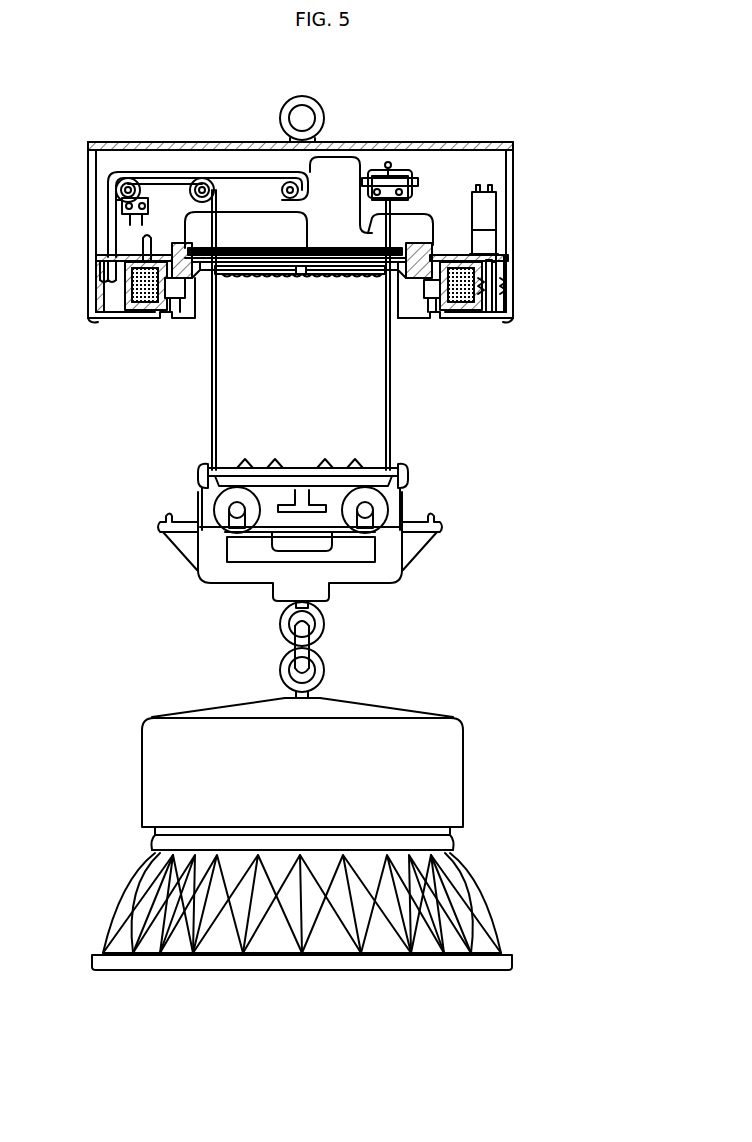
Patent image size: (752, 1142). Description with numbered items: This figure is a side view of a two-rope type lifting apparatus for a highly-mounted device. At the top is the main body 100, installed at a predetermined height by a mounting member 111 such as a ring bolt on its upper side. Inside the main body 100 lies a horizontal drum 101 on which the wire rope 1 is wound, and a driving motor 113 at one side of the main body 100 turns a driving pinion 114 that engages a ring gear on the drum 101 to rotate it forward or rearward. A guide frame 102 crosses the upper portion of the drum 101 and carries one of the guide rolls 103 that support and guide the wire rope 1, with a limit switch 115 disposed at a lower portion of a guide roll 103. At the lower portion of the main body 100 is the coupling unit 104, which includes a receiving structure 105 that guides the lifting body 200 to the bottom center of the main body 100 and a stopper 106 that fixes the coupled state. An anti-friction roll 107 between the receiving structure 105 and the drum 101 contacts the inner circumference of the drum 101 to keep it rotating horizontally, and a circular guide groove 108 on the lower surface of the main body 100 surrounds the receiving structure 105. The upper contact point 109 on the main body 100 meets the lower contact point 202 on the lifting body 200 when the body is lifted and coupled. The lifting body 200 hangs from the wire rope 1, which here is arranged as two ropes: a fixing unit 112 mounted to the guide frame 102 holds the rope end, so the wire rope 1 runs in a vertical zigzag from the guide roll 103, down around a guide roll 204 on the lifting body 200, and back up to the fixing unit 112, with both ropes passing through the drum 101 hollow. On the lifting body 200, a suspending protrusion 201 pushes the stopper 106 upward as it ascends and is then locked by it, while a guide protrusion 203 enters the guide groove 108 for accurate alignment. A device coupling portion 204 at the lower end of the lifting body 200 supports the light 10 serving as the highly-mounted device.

The wire rope 1 is at (210, 384).
The light 10 is at (472, 745).
The main body 100 is at (540, 181).
The drum 101 is at (140, 262).
The guide frame 102 is at (247, 190).
The guide rolls 103 is at (190, 195).
The coupling unit 104 is at (331, 288).
The receiving structure 105 is at (400, 310).
The stopper 106 is at (398, 280).
The anti-friction roll 107 is at (435, 300).
The guide groove 108 is at (172, 318).
The upper contact point 109 is at (265, 282).
The mounting member 111 is at (316, 110).
The fixing unit 112 is at (424, 190).
The driving motor 113 is at (484, 210).
The driving pinion 114 is at (482, 266).
The limit switch 115 is at (124, 208).
The lifting body 200 is at (447, 542).
The suspending protrusion 201 is at (410, 471).
The lower contact point 202 is at (329, 458).
The guide protrusion 203 is at (160, 516).
The device coupling portion 204 is at (228, 500).